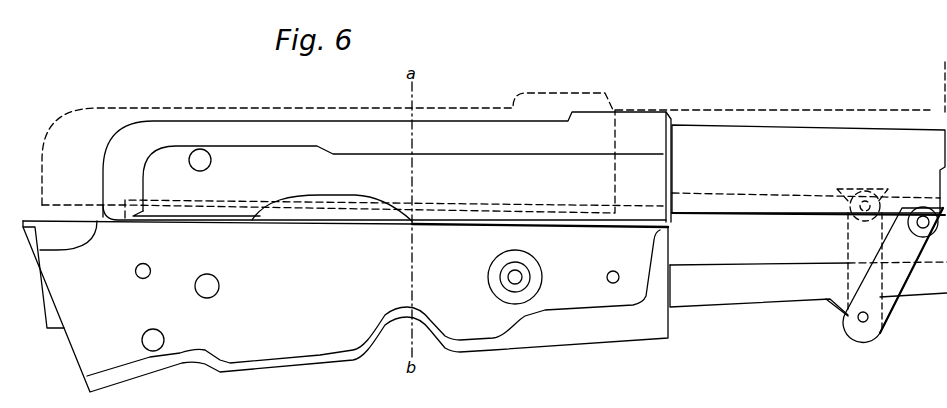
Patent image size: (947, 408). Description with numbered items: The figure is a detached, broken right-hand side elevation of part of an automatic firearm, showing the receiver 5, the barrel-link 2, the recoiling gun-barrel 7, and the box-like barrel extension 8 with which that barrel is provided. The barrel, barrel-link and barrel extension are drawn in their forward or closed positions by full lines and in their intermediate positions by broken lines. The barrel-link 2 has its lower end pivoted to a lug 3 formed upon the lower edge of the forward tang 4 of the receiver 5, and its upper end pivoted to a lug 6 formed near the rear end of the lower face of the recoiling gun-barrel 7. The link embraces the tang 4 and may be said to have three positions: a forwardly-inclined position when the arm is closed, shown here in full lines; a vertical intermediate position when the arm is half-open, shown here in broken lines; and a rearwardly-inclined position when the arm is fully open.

The barrel-link 2 is at (893, 274).
The lug 3 is at (838, 303).
The forward tang 4 is at (808, 288).
The receiver 5 is at (345, 306).
The lug 6 is at (905, 213).
The recoiling gun-barrel 7 is at (808, 170).
The barrel extension 8 is at (493, 142).